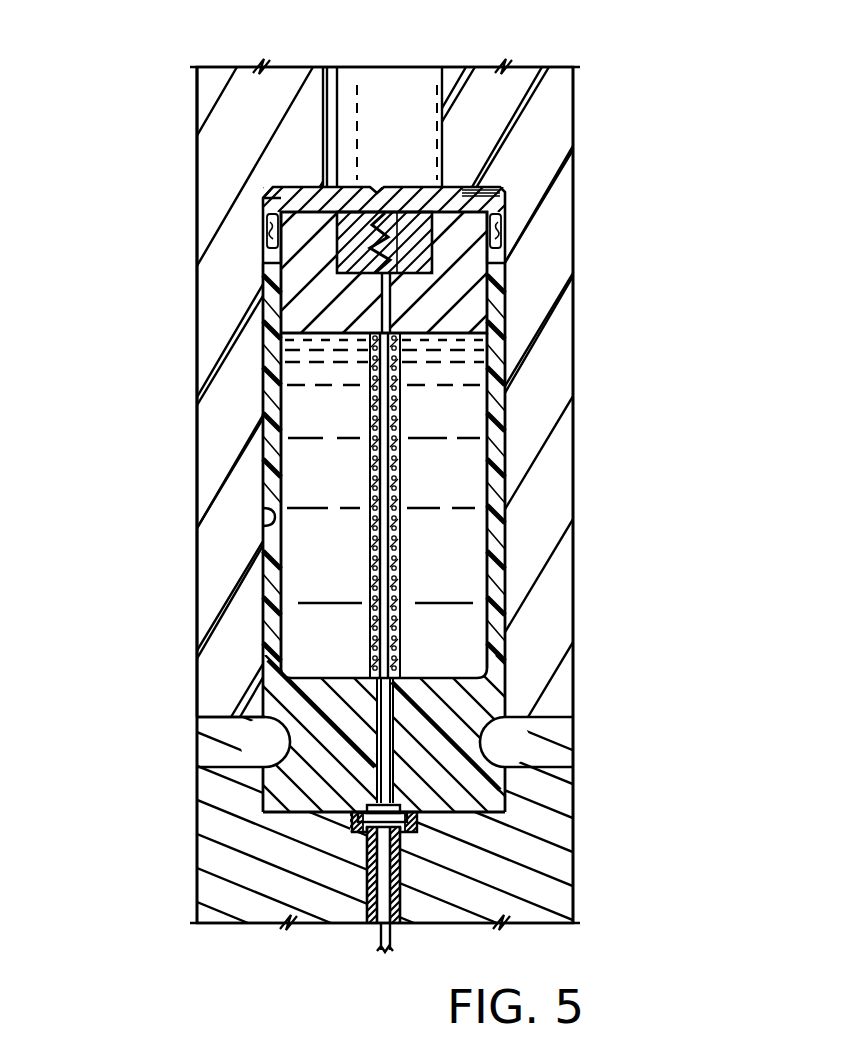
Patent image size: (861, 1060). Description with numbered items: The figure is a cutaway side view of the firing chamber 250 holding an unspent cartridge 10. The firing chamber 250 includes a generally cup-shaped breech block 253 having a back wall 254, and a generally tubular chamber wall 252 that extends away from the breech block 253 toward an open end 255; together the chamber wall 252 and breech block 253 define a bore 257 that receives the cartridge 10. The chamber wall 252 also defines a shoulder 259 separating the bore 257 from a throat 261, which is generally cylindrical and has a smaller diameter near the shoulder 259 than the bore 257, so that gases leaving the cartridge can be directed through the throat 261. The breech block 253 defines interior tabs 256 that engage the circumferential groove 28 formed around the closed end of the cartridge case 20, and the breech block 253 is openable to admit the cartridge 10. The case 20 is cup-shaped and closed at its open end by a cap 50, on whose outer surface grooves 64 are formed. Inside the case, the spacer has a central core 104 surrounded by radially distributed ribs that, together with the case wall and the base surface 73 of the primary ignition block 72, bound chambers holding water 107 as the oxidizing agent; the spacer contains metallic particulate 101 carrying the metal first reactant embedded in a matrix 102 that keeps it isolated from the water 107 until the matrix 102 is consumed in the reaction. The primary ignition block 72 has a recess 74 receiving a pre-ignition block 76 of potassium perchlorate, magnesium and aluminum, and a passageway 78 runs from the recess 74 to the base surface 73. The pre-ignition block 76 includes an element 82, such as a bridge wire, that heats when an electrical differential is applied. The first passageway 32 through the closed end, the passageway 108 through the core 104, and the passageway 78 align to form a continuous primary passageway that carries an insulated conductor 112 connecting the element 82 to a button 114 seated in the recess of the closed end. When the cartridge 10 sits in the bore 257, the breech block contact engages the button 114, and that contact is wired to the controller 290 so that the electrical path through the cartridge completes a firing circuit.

The cartridge 10 is at (512, 400).
The case 20 is at (258, 403).
The circumferential groove 28 is at (508, 745).
The first passageway 32 is at (385, 720).
The cap 50 is at (512, 205).
The grooves 64 is at (340, 187).
The primary ignition block 72 is at (480, 298).
The base surface 73 is at (310, 334).
The recess 74 is at (423, 247).
The pre-ignition block 76 is at (407, 230).
The passageway 78 is at (492, 318).
The element 82 is at (372, 243).
The metallic particulate 101 is at (392, 540).
The matrix 102 is at (395, 552).
The central core 104 is at (370, 413).
The water 107 is at (458, 455).
The passageway 108 is at (383, 631).
The conductor 112 is at (386, 464).
The button 114 is at (408, 806).
The firing chamber 250 is at (608, 482).
The chamber wall 252 is at (212, 593).
The breech block 253 is at (560, 860).
The back wall 254 is at (262, 783).
The open end 255 is at (213, 90).
The interior tabs 256 is at (277, 735).
The bore 257 is at (265, 525).
The shoulder 259 is at (263, 205).
The throat 261 is at (385, 93).
The controller 290 is at (377, 942).